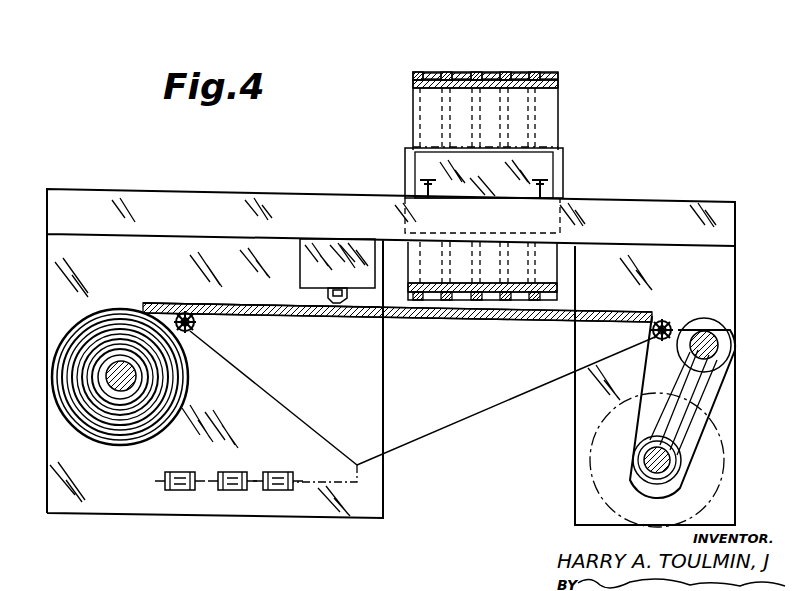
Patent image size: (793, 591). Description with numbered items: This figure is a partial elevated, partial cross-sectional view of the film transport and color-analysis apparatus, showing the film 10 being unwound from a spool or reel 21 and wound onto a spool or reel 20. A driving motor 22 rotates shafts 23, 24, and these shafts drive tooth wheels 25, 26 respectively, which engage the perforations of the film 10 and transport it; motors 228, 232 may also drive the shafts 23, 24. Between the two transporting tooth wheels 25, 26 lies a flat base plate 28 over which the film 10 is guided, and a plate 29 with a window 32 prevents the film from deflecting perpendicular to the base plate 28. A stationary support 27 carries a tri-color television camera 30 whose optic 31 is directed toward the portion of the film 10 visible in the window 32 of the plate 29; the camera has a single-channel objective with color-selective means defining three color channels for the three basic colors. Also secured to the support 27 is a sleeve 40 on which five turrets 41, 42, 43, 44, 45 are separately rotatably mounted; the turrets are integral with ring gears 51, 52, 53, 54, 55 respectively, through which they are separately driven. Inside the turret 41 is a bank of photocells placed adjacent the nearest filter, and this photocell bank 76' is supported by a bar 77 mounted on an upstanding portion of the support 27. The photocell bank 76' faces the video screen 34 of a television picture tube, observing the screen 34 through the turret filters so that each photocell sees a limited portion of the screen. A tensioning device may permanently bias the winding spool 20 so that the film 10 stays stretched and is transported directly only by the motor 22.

The film 10 is at (130, 300).
The spool or reel 20 is at (670, 476).
The spool or reel 21 is at (115, 400).
The driving motor 22 is at (270, 492).
The shaft 23 is at (440, 446).
The shaft 24 is at (325, 432).
The tooth wheel 25 is at (652, 332).
The tooth wheel 26 is at (190, 340).
The stationary support 27 is at (360, 360).
The flat base plate 28 is at (462, 322).
The plate 29 is at (620, 312).
The tri-color television camera 30 is at (310, 255).
The optic 31 is at (338, 292).
The window 32 is at (327, 302).
The video screen 34 is at (555, 170).
The sleeve 40 is at (548, 92).
The turret 41 is at (540, 72).
The turret 42 is at (510, 72).
The turret 43 is at (480, 72).
The turret 44 is at (450, 72).
The turret 45 is at (420, 72).
The ring gear 51 is at (549, 72).
The ring gear 52 is at (520, 72).
The ring gear 53 is at (490, 72).
The ring gear 54 is at (460, 72).
The ring gear 55 is at (432, 72).
The inner box 76' is at (535, 163).
The bar 77 is at (425, 190).
The motor 228 is at (170, 492).
The motor 232 is at (222, 492).